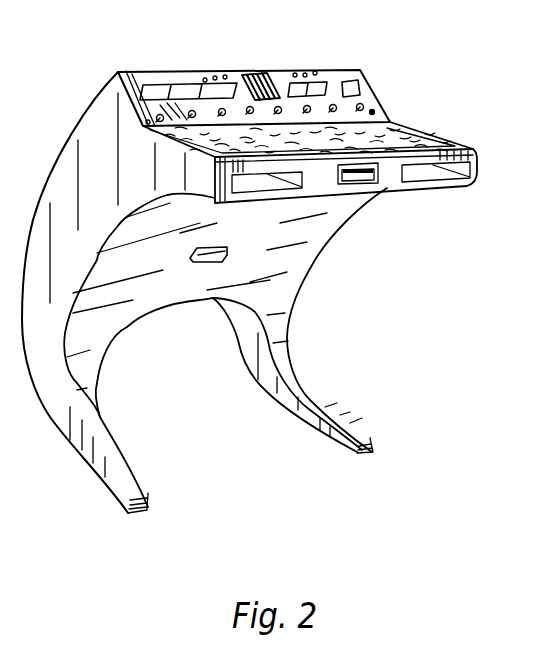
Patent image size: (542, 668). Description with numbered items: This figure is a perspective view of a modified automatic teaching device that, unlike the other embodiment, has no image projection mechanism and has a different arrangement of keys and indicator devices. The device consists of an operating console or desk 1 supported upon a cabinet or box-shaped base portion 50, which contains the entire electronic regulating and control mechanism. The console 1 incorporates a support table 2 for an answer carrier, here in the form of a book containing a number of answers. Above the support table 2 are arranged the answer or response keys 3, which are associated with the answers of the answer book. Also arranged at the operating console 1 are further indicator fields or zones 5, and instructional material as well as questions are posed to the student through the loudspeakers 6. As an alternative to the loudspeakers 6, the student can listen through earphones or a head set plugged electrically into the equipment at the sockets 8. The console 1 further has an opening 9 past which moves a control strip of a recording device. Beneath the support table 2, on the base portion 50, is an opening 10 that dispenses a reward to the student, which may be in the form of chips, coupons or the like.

The operating console 1 is at (468, 138).
The support table 2 is at (398, 138).
The answer keys 3 is at (363, 105).
The indicator fields 5 is at (207, 92).
The loudspeakers 6 is at (255, 83).
The sockets 8 is at (374, 112).
The opening 9 is at (348, 85).
The opening 10 is at (227, 255).
The base portion 50 is at (303, 230).